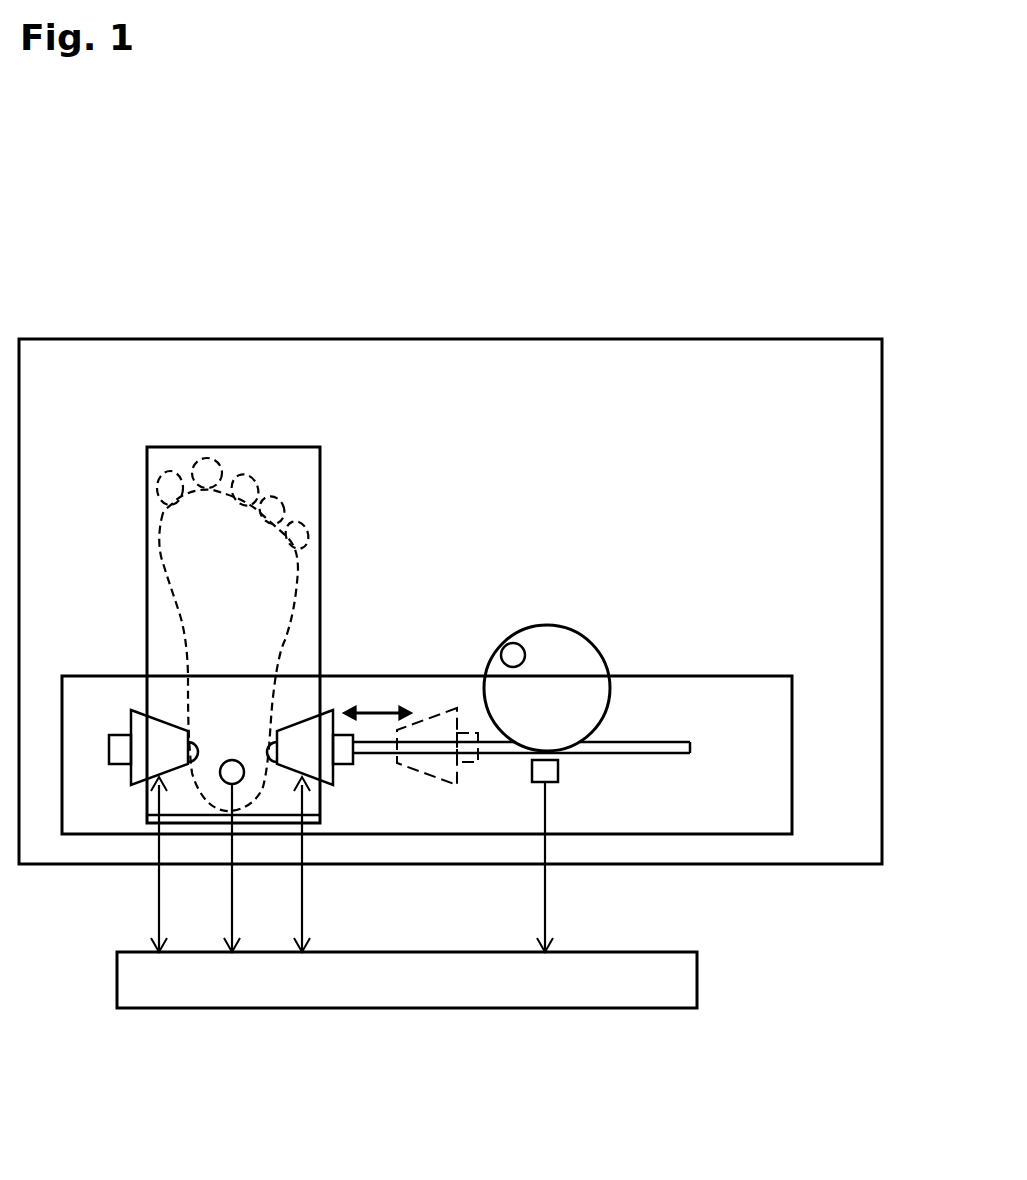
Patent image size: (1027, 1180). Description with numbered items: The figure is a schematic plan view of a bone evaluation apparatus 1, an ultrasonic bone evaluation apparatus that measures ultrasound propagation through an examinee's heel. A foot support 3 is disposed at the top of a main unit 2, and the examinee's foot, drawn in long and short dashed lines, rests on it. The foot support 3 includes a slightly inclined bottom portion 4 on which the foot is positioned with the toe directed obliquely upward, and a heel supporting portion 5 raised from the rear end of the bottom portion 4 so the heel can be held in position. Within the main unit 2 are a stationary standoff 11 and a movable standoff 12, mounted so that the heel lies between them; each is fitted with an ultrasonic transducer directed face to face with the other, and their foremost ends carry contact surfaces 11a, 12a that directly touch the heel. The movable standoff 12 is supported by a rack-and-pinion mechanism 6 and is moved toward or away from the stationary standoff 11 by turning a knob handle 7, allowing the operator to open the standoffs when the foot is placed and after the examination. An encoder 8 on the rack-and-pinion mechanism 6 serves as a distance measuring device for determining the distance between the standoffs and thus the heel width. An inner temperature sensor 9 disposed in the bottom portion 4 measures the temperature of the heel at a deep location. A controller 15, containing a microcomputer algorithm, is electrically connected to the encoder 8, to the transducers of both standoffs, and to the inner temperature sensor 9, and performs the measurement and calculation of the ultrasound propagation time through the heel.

The bone evaluation apparatus 1 is at (522, 246).
The main unit 2 is at (817, 360).
The foot support 3 is at (320, 457).
The bottom portion 4 is at (312, 583).
The heel supporting portion 5 is at (194, 824).
The rack-and-pinion mechanism 6 is at (575, 762).
The knob handle 7 is at (513, 650).
The encoder 8 is at (532, 772).
The inner temperature sensor 9 is at (232, 760).
The stationary standoff 11 is at (162, 727).
The contact surface 11a is at (186, 762).
The movable standoff 12 is at (300, 722).
The contact surface 12a is at (280, 762).
The controller 15 is at (697, 980).